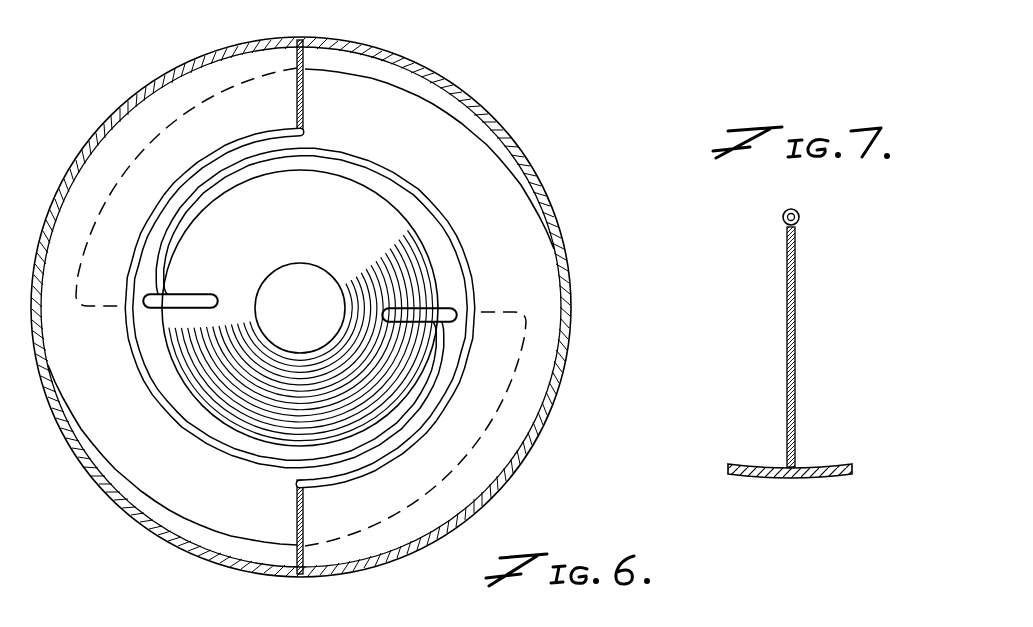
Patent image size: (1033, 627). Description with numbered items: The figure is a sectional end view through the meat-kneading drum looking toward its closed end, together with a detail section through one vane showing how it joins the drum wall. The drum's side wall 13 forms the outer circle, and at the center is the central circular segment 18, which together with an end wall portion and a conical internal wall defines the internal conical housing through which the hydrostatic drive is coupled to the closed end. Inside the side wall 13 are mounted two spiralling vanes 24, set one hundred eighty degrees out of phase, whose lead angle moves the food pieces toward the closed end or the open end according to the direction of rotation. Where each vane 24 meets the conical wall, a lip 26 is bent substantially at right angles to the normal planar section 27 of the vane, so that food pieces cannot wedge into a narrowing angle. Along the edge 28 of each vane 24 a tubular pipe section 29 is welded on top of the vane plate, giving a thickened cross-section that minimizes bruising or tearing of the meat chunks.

In FIG. 7, the side wall 13 is at (831, 465).
In FIG. 6, the central circular segment 18 is at (388, 216).
In FIG. 6, the spiralling vane 24 is at (507, 199).
In FIG. 7, the spiralling vane 24 is at (798, 357).
In FIG. 6, the lip 26 is at (448, 304).
In FIG. 6, the planar section of the vane 27 is at (145, 148).
In FIG. 6, the edge of the vane 28 is at (231, 131).
In FIG. 7, the edge of the vane 28 is at (782, 220).
In FIG. 6, the tubular pipe section 29 is at (305, 133).
In FIG. 7, the tubular pipe section 29 is at (800, 217).